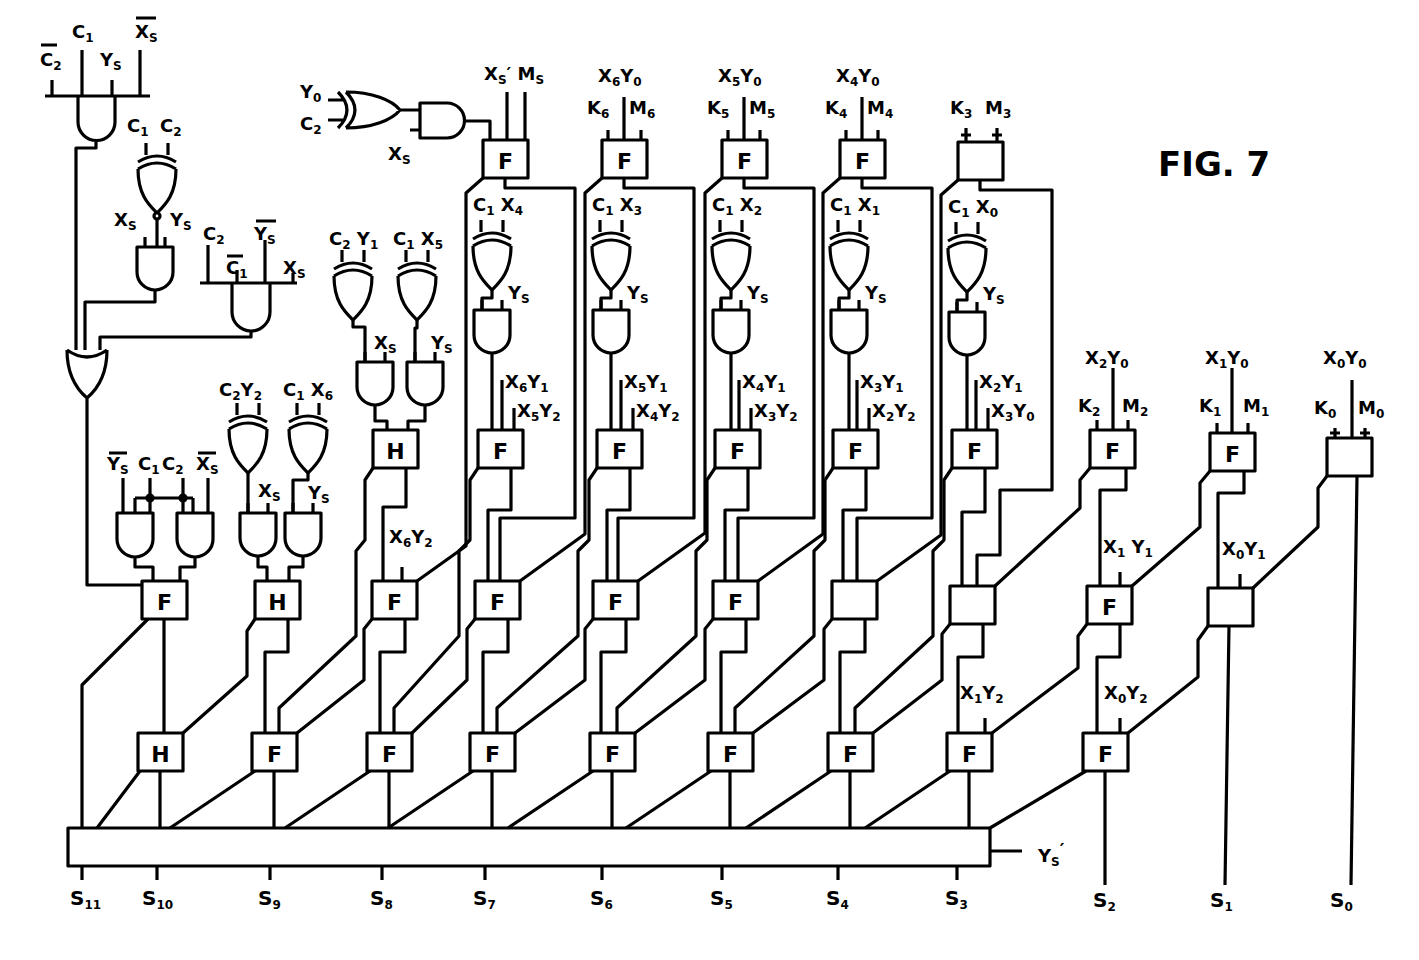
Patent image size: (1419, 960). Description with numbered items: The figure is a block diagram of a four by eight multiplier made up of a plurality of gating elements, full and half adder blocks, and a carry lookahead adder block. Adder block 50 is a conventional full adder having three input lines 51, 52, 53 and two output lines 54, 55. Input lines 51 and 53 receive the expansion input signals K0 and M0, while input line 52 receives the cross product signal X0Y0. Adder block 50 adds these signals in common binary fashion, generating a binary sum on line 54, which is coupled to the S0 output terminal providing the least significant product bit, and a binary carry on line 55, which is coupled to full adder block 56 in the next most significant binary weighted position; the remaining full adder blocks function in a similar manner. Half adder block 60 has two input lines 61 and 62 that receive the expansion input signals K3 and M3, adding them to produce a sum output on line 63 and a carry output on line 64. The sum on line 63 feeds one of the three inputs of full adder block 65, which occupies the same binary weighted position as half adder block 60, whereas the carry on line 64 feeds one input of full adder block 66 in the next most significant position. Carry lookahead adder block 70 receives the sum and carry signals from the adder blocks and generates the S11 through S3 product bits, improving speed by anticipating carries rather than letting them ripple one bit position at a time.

The adder block 50 is at (1327, 462).
The input line 51 is at (1332, 434).
The input line 52 is at (1350, 396).
The input line 53 is at (1368, 433).
The output line 54 is at (1357, 502).
The output line 55 is at (1318, 502).
The full adder block 56 is at (1253, 620).
The half adder block 60 is at (1003, 163).
The input line 61 is at (961, 136).
The input line 62 is at (1001, 136).
The line 63 is at (1005, 196).
The line 64 is at (949, 190).
The full adder block 65 is at (995, 612).
The full adder block 66 is at (877, 608).
The carry lookahead adder block 70 is at (990, 866).